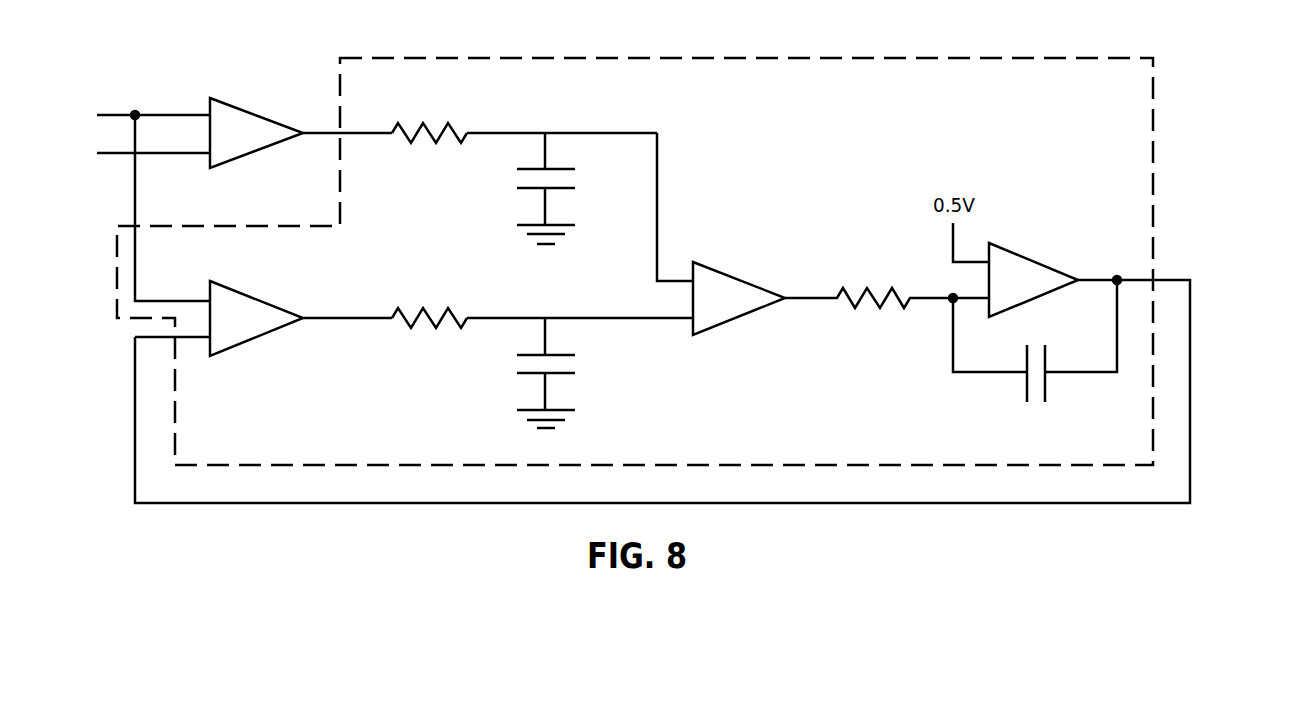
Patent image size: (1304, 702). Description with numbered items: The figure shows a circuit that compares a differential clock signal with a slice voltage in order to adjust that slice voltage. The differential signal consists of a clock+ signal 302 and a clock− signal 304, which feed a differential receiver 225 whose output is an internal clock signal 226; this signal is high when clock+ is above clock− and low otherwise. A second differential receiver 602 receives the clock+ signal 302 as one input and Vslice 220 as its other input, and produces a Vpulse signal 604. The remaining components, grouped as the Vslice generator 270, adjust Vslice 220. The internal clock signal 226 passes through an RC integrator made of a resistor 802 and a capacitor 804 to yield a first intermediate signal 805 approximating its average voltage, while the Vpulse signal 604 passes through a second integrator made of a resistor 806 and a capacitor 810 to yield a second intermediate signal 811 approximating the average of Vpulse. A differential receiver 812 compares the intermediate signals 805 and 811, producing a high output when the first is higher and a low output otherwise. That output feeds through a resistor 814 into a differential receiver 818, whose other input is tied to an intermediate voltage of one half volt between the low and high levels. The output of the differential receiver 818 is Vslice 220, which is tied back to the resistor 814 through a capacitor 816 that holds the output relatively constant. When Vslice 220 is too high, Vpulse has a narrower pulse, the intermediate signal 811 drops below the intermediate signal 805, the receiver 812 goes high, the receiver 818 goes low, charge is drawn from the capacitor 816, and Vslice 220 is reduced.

The Vslice 220 is at (668, 375).
The differential receiver 225 is at (256, 133).
The internal clock signal 226 is at (320, 130).
The Vslice generator 270 is at (635, 261).
The clock+ signal 302 is at (106, 105).
The clock− signal 304 is at (106, 161).
The differential receiver 602 is at (256, 318).
The Vpulse signal 604 is at (357, 322).
The resistor 802 is at (429, 113).
The capacitor 804 is at (566, 188).
The first intermediate signal 805 is at (683, 207).
The resistor 806 is at (429, 298).
The capacitor 810 is at (566, 373).
The second intermediate signal 811 is at (580, 333).
The differential receiver 812 is at (739, 298).
The resistor 814 is at (887, 278).
The capacitor 816 is at (1035, 354).
The differential receiver 818 is at (1033, 280).